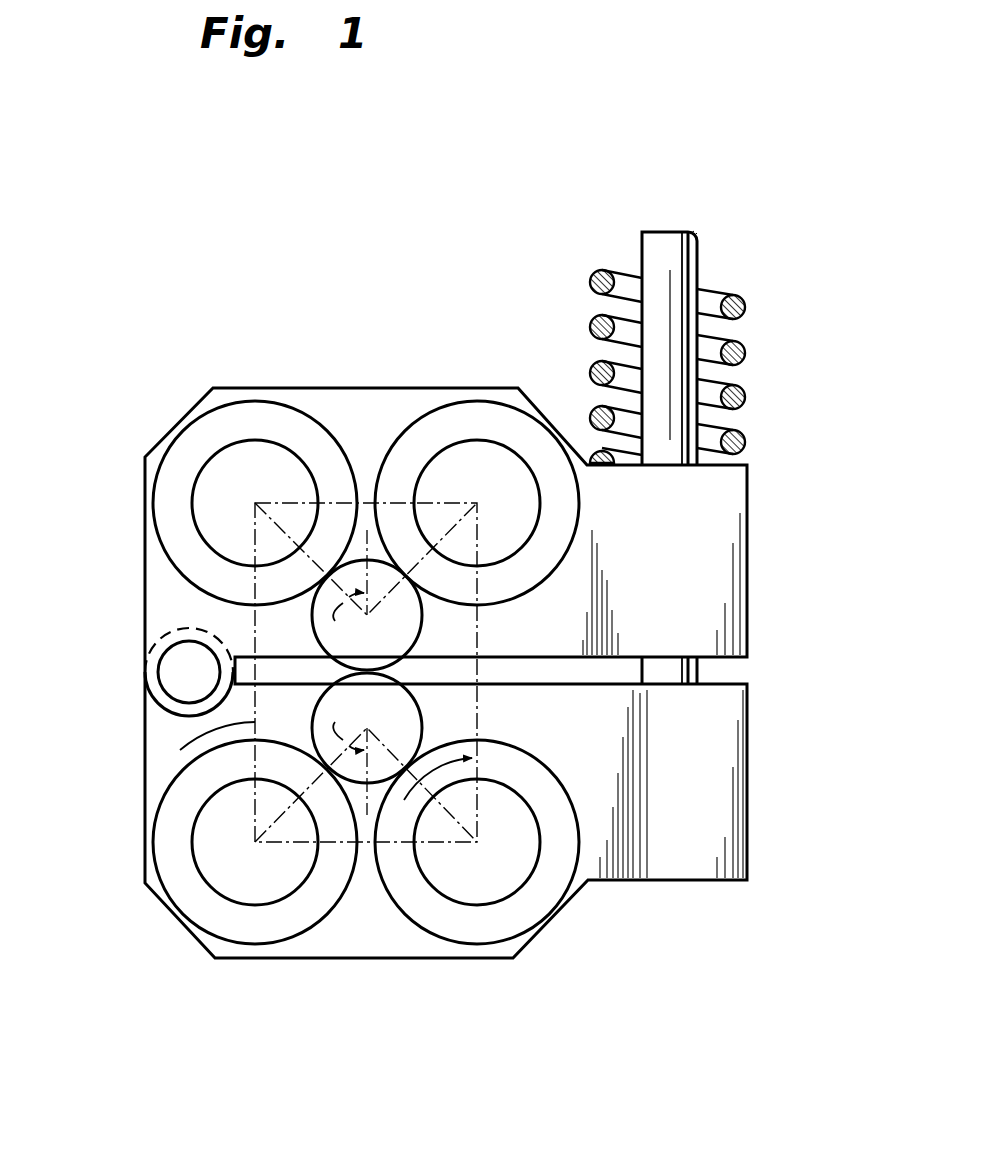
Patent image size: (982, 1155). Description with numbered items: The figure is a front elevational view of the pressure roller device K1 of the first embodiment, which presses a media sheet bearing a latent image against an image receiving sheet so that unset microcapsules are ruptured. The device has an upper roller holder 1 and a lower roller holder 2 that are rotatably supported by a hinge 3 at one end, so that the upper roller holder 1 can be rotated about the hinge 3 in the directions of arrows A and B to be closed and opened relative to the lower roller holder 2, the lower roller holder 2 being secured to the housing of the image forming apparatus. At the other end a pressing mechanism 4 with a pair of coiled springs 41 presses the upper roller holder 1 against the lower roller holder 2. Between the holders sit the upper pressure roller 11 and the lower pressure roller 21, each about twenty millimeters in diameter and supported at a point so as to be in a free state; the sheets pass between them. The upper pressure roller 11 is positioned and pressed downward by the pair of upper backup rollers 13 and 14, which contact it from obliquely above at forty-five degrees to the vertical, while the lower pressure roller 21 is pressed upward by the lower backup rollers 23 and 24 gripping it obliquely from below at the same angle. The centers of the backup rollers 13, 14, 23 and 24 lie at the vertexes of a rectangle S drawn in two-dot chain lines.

The pressure roller device K1 is at (150, 360).
The upper roller holder 1 is at (360, 408).
The lower roller holder 2 is at (363, 937).
The hinge 3 is at (163, 692).
The pressing mechanism 4 is at (745, 245).
The coiled springs 41 is at (748, 305).
The upper pressure roller 11 is at (412, 612).
The lower pressure roller 21 is at (412, 735).
The upper backup roller 13 is at (248, 417).
The upper backup roller 14 is at (475, 413).
The lower backup roller 23 is at (263, 932).
The lower backup roller 24 is at (483, 928).
The rectangle S is at (200, 743).
The arrow A is at (633, 210).
The arrow B is at (618, 203).